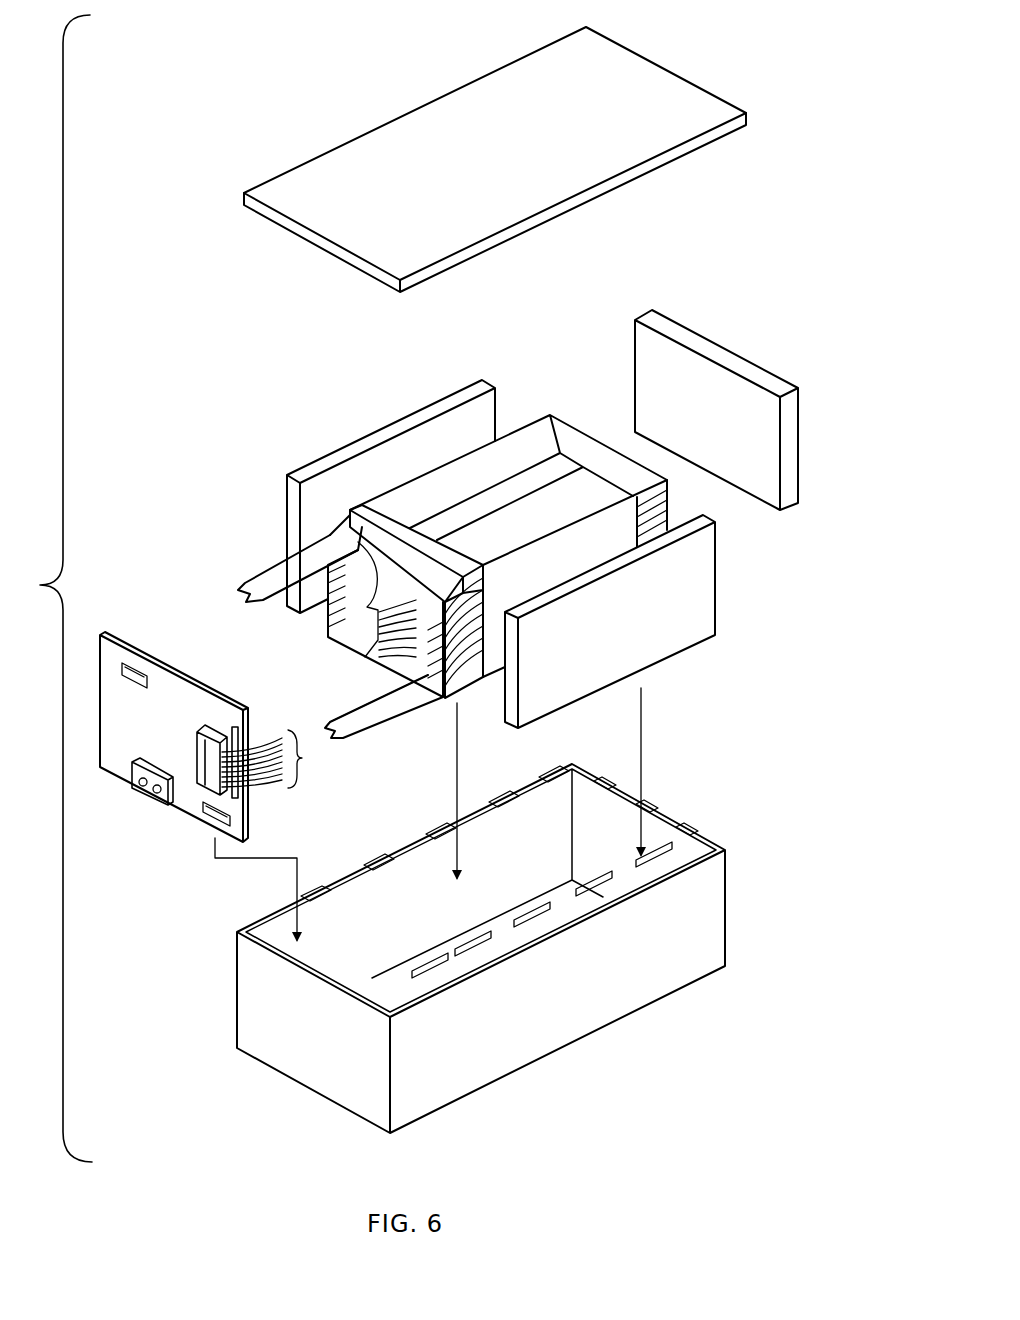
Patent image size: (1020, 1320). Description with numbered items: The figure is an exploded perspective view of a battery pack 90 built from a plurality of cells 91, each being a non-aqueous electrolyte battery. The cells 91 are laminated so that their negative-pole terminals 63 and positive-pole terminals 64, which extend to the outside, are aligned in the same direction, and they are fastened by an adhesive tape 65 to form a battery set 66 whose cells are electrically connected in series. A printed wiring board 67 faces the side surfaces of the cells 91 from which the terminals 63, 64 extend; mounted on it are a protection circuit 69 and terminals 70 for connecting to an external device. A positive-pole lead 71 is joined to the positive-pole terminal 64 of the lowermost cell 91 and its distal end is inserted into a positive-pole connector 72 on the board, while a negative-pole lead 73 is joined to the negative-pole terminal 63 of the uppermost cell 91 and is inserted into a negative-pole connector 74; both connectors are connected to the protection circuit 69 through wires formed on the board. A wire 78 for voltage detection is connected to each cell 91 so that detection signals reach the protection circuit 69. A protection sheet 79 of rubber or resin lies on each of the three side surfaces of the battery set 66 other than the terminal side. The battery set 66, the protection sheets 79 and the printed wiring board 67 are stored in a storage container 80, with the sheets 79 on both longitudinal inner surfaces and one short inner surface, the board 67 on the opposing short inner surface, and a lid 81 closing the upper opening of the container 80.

The negative-pole terminal 63 is at (330, 533).
The positive-pole terminal 64 is at (415, 588).
The adhesive tape 65 is at (568, 490).
The battery set 66 is at (563, 520).
The printed wiring board 67 is at (133, 636).
The protection circuit 69 is at (210, 727).
The terminals 70 is at (158, 802).
The positive-pole lead 71 is at (375, 717).
The positive-pole connector 72 is at (240, 820).
The negative-pole lead 73 is at (258, 578).
The negative-pole connector 74 is at (140, 672).
The wire for voltage detection 78 is at (363, 635).
The protection sheet 79 is at (357, 452).
The storage container 80 is at (700, 912).
The lid 81 is at (680, 103).
The battery pack 90 is at (142, 184).
The cell 91 is at (656, 527).